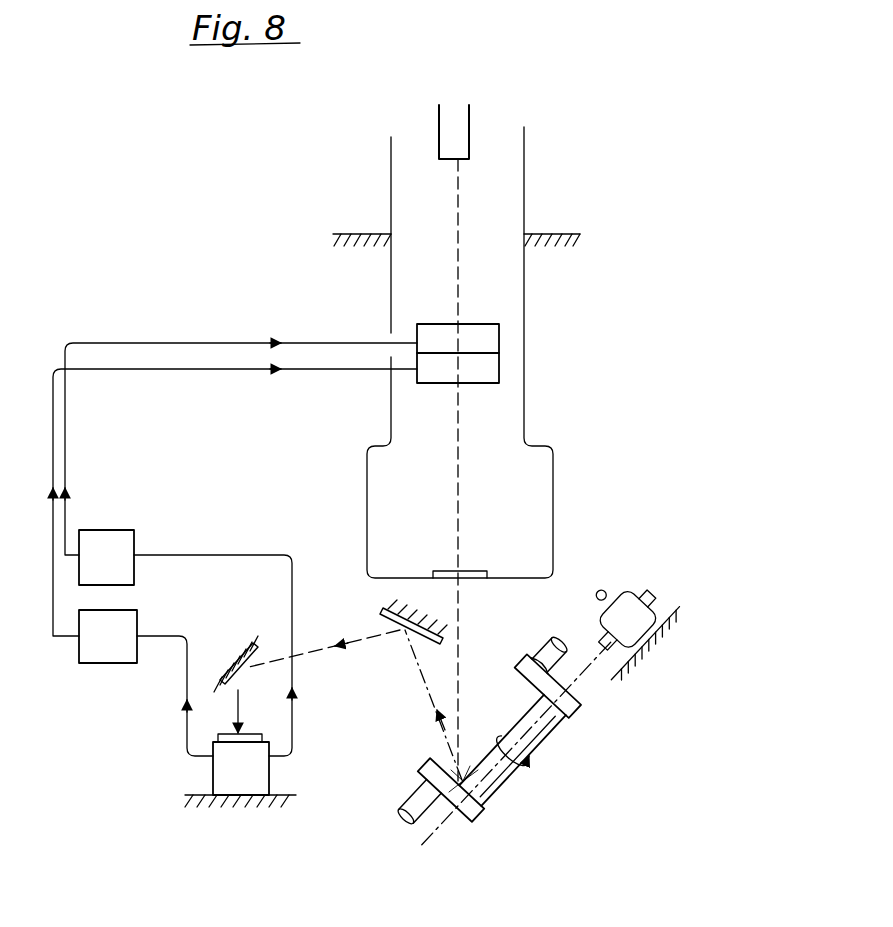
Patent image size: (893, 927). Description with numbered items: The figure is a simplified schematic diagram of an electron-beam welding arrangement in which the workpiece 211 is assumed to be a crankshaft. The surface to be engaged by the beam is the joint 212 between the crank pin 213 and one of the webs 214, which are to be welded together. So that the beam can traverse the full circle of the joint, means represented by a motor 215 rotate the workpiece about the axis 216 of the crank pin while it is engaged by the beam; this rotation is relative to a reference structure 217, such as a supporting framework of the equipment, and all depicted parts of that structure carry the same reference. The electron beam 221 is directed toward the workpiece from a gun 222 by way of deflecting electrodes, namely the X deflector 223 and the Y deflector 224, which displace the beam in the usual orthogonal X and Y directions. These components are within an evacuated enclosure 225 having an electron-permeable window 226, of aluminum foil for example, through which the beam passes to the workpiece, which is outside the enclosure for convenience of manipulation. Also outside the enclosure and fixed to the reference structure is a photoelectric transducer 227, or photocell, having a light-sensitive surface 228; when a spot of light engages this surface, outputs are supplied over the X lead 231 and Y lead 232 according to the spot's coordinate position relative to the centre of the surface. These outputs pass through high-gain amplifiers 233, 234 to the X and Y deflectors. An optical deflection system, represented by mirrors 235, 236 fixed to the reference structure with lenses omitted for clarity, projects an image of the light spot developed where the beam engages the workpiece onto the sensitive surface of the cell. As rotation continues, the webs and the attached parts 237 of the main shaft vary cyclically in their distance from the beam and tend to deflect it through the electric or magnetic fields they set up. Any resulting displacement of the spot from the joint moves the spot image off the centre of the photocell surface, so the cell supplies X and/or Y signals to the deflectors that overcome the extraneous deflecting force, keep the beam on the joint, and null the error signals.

The workpiece 211 is at (516, 704).
The joint 212 is at (464, 779).
The crank pin 213 is at (513, 750).
The web 214 is at (451, 790).
The motor 215 is at (620, 613).
The axis 216 is at (518, 742).
The reference structure 217 is at (348, 233).
The electron beam 221 is at (459, 492).
The gun 222 is at (462, 160).
The X deflector 223 is at (487, 324).
The Y deflector 224 is at (487, 383).
The evacuated enclosure 225 is at (524, 437).
The electron-permeable window 226 is at (480, 572).
The photoelectric transducer 227 is at (212, 768).
The light-sensitive surface 228 is at (246, 734).
The X lead 231 is at (210, 555).
The Y lead 232 is at (157, 636).
The high-gain amplifier 233 is at (116, 530).
The high-gain amplifier 234 is at (118, 663).
The mirror 235 is at (385, 622).
The mirror 236 is at (250, 652).
The attached parts of the main shaft 237 is at (482, 730).